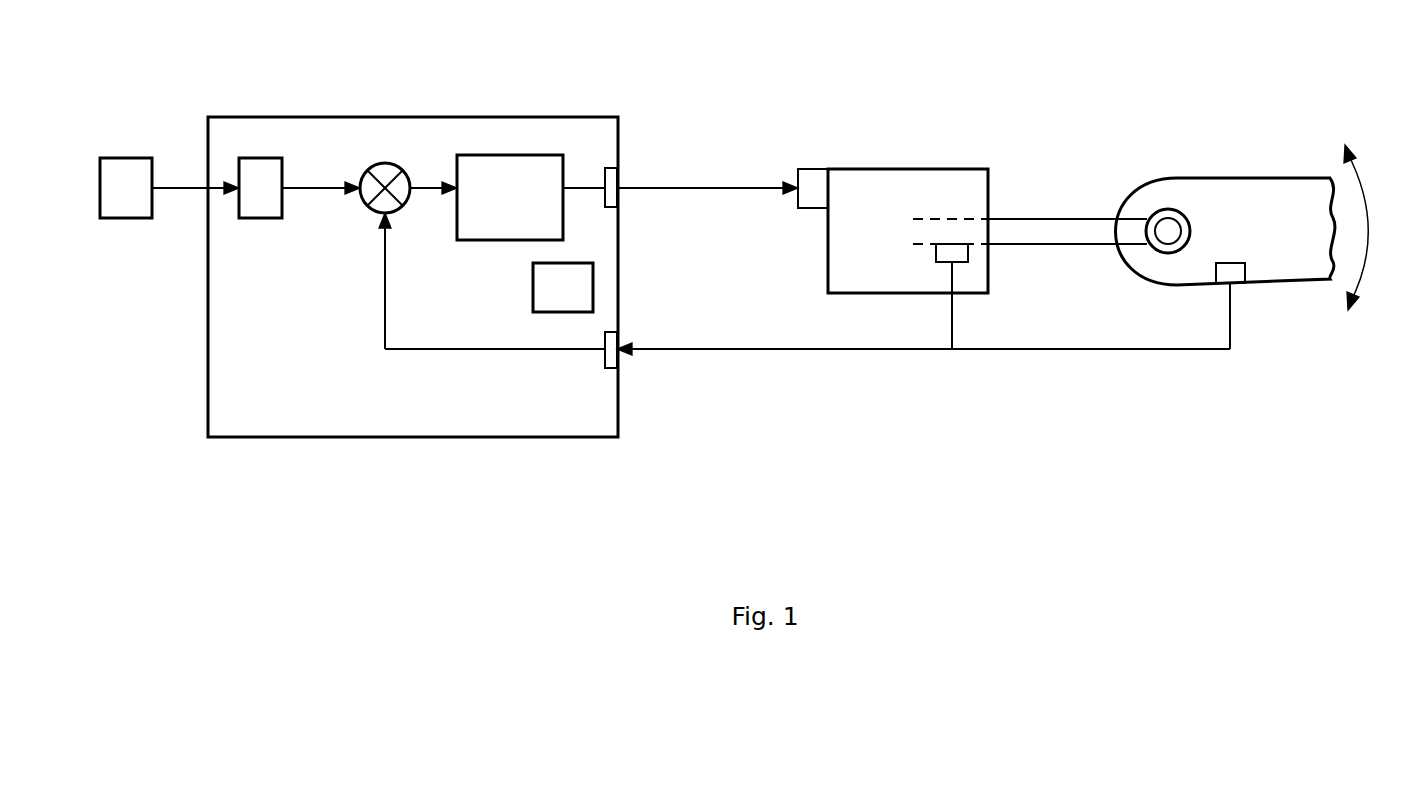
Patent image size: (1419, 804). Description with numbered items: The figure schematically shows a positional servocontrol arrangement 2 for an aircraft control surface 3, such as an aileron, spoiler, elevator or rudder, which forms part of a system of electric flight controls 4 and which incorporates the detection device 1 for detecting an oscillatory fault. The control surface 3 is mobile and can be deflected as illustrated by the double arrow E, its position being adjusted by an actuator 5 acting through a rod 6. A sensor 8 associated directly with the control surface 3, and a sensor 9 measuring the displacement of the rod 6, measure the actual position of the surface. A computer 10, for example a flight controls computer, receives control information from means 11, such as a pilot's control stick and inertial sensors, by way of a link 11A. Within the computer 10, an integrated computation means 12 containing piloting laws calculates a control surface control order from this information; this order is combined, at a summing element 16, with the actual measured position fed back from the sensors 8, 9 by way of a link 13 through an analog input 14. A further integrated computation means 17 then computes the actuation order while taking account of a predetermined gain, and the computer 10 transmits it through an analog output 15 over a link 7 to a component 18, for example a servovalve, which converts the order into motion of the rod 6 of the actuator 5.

The device 1 is at (593, 287).
The positional servocontrol arrangement 2 is at (400, 514).
The control surface 3 is at (1280, 286).
The system of electric flight controls 4 is at (768, 115).
The actuator 5 is at (868, 295).
The rod 6 is at (1084, 247).
The link 7 is at (707, 183).
The sensor 8 is at (1222, 285).
The sensor 9 is at (952, 253).
The computer 10 is at (545, 439).
The means for generating control information 11 is at (123, 222).
The link 11A is at (176, 184).
The integrated computation means 12 is at (262, 220).
The link 13 is at (793, 352).
The input 14 is at (618, 357).
The output 15 is at (619, 197).
The mixer 16 is at (366, 172).
The integrated computation means 17 is at (493, 242).
The component 18 is at (812, 168).
The double arrow E is at (1373, 218).